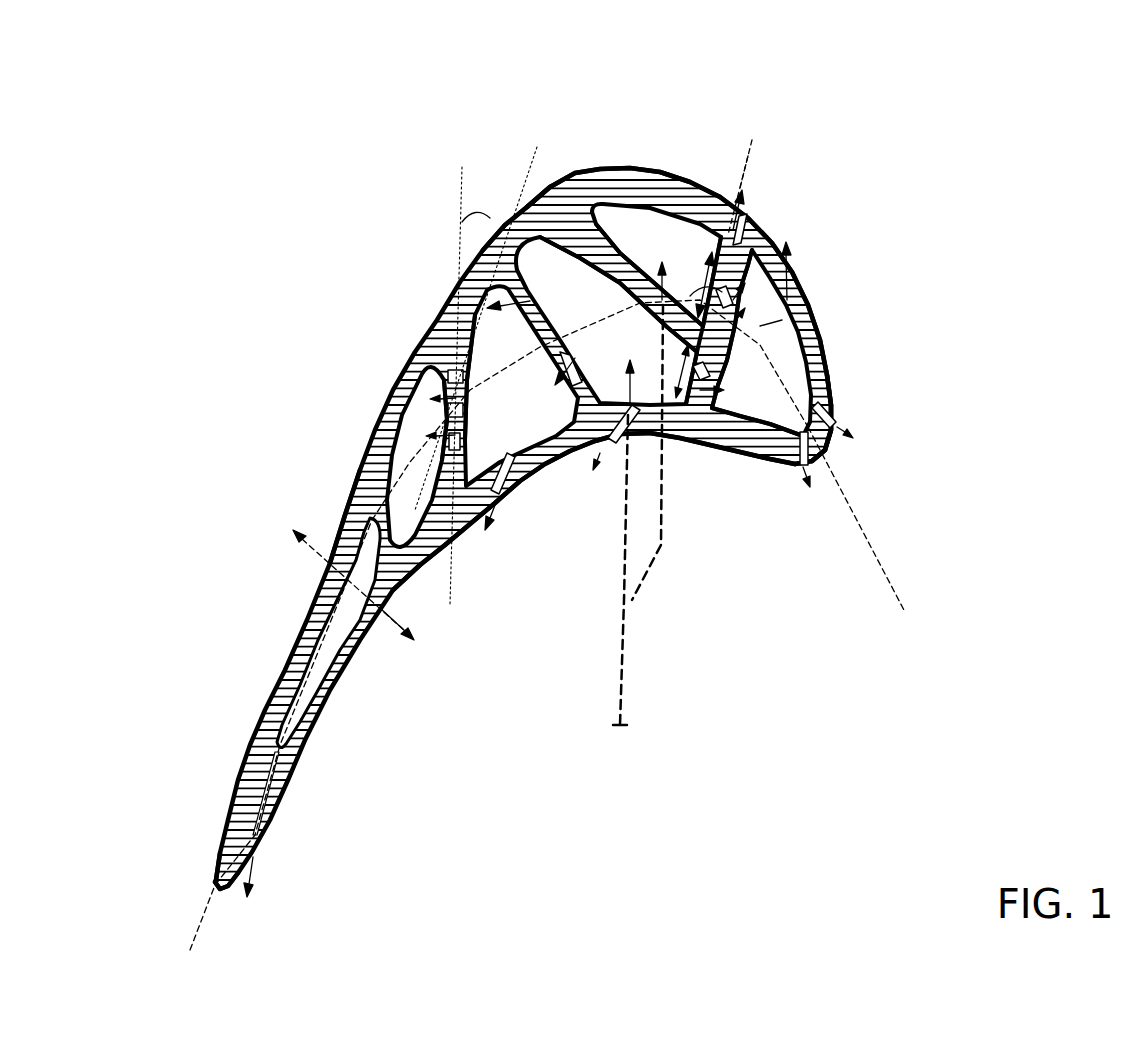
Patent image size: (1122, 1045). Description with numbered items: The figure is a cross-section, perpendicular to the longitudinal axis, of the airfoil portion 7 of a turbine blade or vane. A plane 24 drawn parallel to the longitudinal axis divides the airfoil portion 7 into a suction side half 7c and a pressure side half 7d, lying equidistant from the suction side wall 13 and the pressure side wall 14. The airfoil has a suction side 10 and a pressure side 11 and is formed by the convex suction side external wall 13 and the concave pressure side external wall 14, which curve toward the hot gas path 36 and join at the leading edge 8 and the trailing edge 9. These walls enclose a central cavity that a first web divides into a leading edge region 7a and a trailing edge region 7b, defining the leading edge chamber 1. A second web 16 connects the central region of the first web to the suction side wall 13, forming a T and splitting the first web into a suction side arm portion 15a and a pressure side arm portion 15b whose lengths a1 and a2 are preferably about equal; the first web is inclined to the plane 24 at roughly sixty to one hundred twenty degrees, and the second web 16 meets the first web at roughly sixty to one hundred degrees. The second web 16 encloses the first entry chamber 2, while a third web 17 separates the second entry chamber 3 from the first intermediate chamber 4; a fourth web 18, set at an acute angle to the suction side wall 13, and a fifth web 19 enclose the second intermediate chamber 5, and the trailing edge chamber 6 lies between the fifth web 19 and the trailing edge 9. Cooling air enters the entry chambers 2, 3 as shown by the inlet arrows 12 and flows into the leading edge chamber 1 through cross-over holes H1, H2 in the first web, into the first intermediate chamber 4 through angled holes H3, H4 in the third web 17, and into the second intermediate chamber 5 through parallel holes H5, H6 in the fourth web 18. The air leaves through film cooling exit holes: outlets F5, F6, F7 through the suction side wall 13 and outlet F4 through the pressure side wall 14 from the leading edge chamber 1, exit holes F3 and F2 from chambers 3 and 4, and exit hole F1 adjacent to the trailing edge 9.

The leading edge chamber 1 is at (775, 412).
The first entry chamber 2 is at (628, 249).
The second entry chamber 3 is at (537, 282).
The first intermediate chamber 4 is at (521, 386).
The second intermediate chamber 5 is at (395, 495).
The trailing edge chamber 6 is at (336, 625).
The airfoil portion 7 is at (400, 194).
The leading edge region 7a is at (788, 154).
The trailing edge region 7b is at (748, 154).
The suction side half 7c is at (290, 528).
The pressure side half 7d is at (442, 673).
The leading edge 8 is at (760, 243).
The trailing edge 9 is at (201, 893).
The suction side 10 is at (575, 163).
The pressure side 11 is at (552, 476).
The inlet arrows 12 is at (628, 593).
The suction side external wall 13 is at (517, 237).
The pressure side external wall 14 is at (712, 428).
The suction side arm portion 15a is at (712, 250).
The pressure side arm portion 15b is at (684, 400).
The second web 16 is at (613, 262).
The third web 17 is at (462, 338).
The fourth web 18 is at (432, 442).
The fifth web 19 is at (378, 508).
The plane 24 is at (871, 539).
The hot gas path 36 is at (886, 470).
The exit hole F1 is at (272, 865).
The exit hole F2 is at (476, 529).
The exit hole F3 is at (581, 472).
The outlet F4 is at (793, 482).
The outlet F5 is at (855, 418).
The outlet F6 is at (801, 262).
The outlet F7 is at (721, 200).
The cross-over hole H1 is at (750, 313).
The cross-over hole H2 is at (727, 388).
The cross-over hole H3 is at (533, 302).
The cross-over hole H4 is at (585, 362).
The cross-over hole H5 is at (467, 392).
The cross-over hole H6 is at (463, 432).
The length of suction side arm portion a1 is at (704, 285).
The length of pressure side arm portion a2 is at (657, 375).